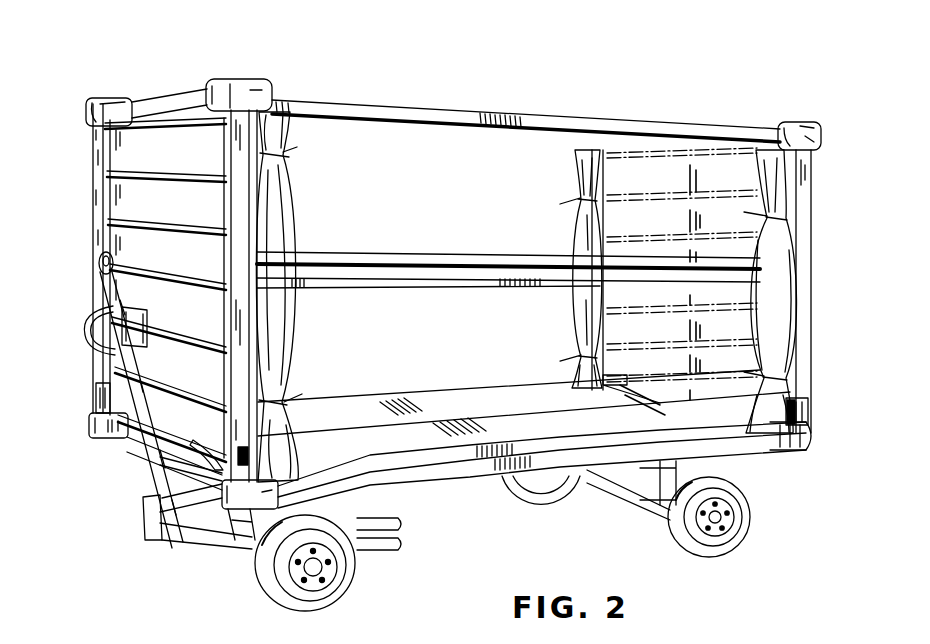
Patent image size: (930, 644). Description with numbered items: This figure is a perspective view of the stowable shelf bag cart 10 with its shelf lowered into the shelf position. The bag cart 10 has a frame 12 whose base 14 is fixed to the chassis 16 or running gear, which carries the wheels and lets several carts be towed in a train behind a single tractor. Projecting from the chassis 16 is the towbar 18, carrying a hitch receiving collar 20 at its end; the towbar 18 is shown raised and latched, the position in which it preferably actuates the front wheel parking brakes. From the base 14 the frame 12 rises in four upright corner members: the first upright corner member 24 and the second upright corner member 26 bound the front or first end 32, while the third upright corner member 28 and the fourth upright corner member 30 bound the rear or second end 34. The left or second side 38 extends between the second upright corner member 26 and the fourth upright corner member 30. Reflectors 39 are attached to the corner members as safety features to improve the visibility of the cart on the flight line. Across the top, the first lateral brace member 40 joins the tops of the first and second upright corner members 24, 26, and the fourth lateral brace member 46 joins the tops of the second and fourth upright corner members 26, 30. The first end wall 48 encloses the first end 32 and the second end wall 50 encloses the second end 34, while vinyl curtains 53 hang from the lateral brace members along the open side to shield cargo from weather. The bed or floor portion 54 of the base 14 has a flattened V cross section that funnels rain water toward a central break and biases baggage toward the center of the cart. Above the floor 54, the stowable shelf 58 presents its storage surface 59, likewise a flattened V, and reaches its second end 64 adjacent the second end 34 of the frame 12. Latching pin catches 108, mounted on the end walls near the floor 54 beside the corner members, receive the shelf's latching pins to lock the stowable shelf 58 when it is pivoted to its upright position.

The stowable shelf bag cart 10 is at (586, 107).
The frame 12 is at (91, 242).
The base 14 is at (487, 483).
The chassis 16 is at (190, 553).
The towbar 18 is at (141, 458).
The collar 20 is at (100, 270).
The first upright corner member 24 is at (97, 177).
The second upright corner member 26 is at (236, 170).
The third upright corner member 28 is at (593, 212).
The fourth upright corner member 30 is at (802, 228).
The first end 32 is at (90, 422).
The second end 34 is at (808, 317).
The second side 38 is at (457, 487).
The reflectors 39 is at (100, 397).
The first lateral brace member 40 is at (160, 110).
The fourth lateral brace member 46 is at (465, 117).
The first end wall 48 is at (180, 264).
The second end wall 50 is at (666, 186).
The vinyl curtains 53 is at (277, 220).
The floor portion 54 is at (482, 395).
The stowable shelf 58 is at (467, 284).
The storage surface 59 is at (405, 262).
The second end 64 is at (713, 264).
The latching pin catch 108 is at (620, 378).